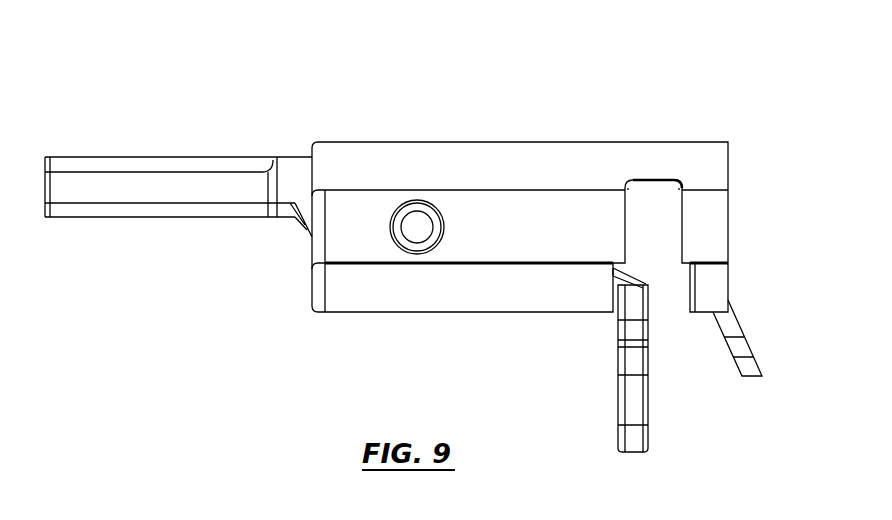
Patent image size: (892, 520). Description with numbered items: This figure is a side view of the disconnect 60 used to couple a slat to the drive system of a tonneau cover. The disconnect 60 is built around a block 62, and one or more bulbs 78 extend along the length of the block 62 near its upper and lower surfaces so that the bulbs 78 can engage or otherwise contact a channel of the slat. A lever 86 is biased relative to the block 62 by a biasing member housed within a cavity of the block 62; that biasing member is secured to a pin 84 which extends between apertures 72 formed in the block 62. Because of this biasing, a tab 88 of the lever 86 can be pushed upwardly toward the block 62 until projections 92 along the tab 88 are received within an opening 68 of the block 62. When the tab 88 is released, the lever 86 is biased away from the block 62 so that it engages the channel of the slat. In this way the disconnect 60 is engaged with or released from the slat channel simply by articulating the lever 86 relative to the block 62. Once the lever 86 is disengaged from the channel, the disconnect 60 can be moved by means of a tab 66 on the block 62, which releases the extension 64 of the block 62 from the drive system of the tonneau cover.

The disconnect 60 is at (440, 110).
The block 62 is at (570, 222).
The extension 64 is at (115, 193).
The tab 66 is at (735, 338).
The opening 68 is at (655, 178).
The apertures 72 is at (442, 246).
The bulbs 78 is at (356, 150).
The pin 84 is at (417, 228).
The lever 86 is at (694, 368).
The tab 88 is at (632, 405).
The projections 92 is at (632, 327).